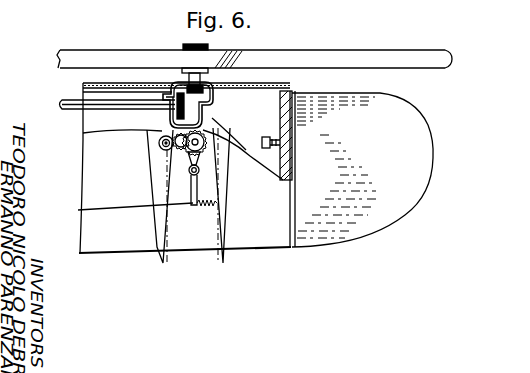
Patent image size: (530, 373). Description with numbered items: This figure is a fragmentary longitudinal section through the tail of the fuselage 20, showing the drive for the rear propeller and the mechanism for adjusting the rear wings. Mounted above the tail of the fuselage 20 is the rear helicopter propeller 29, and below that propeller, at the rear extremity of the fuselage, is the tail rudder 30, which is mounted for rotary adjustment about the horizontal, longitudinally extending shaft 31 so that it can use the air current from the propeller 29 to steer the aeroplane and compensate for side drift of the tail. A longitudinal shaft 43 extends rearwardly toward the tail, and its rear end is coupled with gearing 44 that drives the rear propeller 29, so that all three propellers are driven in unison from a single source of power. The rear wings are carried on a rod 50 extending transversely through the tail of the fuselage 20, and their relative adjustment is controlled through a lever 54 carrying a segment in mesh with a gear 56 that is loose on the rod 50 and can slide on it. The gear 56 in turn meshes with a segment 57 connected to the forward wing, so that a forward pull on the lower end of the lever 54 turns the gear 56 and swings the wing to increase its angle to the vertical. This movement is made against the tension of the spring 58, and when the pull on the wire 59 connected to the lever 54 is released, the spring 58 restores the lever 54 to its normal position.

The fuselage 20 is at (118, 249).
The rear helicopter propeller 29 is at (345, 50).
The tail rudder 30 is at (398, 119).
The shaft 31 is at (281, 134).
The longitudinal shaft 43 is at (73, 112).
The gearing 44 is at (212, 88).
The rod 50 is at (179, 153).
The lever 54 is at (198, 191).
The gear 56 is at (202, 150).
The segment 57 is at (159, 149).
The spring 58 is at (210, 208).
The wire 59 is at (113, 210).